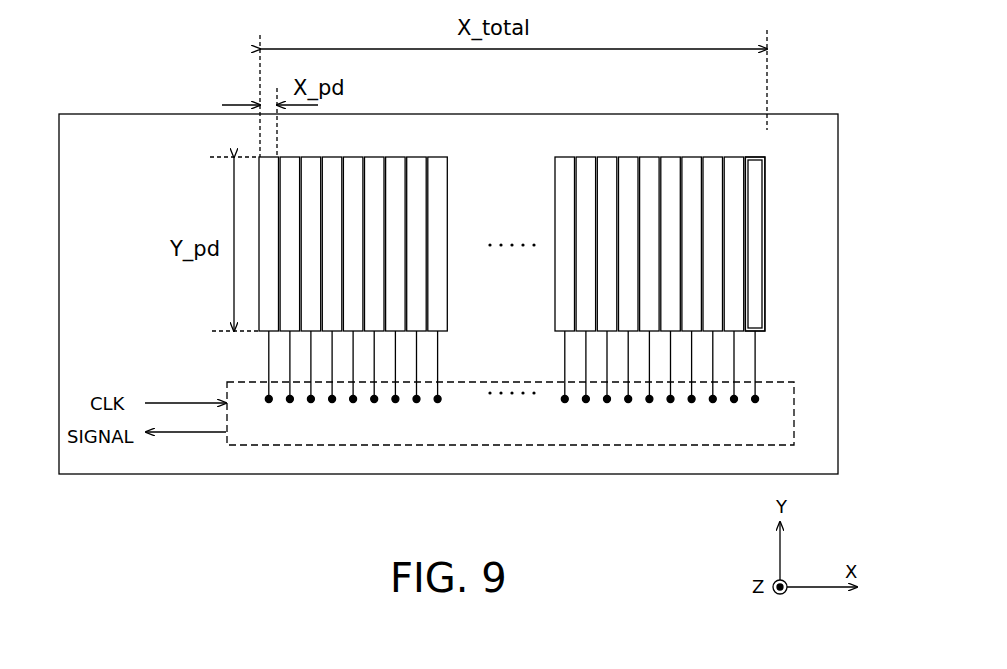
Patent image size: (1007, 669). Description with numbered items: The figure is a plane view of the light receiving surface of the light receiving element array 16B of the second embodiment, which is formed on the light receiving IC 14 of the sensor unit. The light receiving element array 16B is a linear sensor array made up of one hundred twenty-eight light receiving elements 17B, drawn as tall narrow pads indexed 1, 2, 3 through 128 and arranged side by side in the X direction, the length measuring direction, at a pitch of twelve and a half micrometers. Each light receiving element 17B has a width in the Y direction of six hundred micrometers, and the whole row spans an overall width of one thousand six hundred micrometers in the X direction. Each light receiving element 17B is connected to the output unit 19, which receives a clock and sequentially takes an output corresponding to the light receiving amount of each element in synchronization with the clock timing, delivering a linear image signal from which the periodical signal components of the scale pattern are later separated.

The light receiving IC 14 is at (798, 113).
The light receiving element array 16B is at (767, 195).
The light receiving element 17B is at (758, 268).
The output unit 19 is at (777, 382).
The pad 1 is at (269, 271).
The pad 2 is at (290, 271).
The pad 3 is at (311, 271).
The pad 128 is at (754, 270).